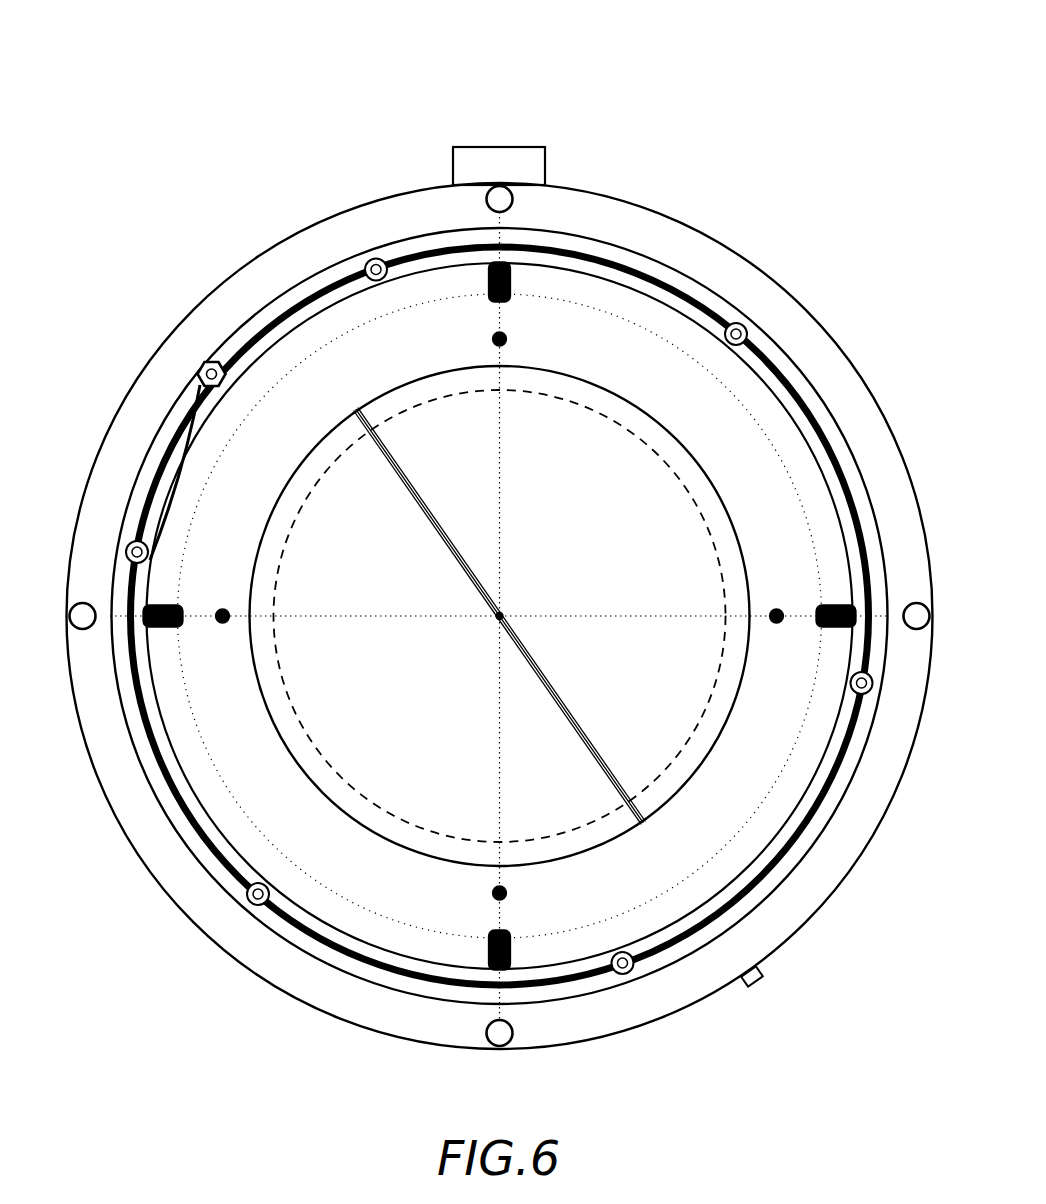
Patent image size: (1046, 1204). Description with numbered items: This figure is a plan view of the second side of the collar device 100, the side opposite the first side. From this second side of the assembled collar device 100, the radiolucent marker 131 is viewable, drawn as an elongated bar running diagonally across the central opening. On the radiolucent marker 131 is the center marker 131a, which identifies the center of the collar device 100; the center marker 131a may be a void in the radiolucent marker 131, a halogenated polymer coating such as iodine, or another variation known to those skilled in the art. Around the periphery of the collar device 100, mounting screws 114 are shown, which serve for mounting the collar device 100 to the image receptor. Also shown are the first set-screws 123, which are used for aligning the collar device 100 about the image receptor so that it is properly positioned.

The collar device 100 is at (500, 536).
The mounting screws 114 is at (515, 955).
The first set-screws 123 is at (220, 609).
The radiolucent marker 131 is at (588, 736).
The center marker 131a is at (505, 611).